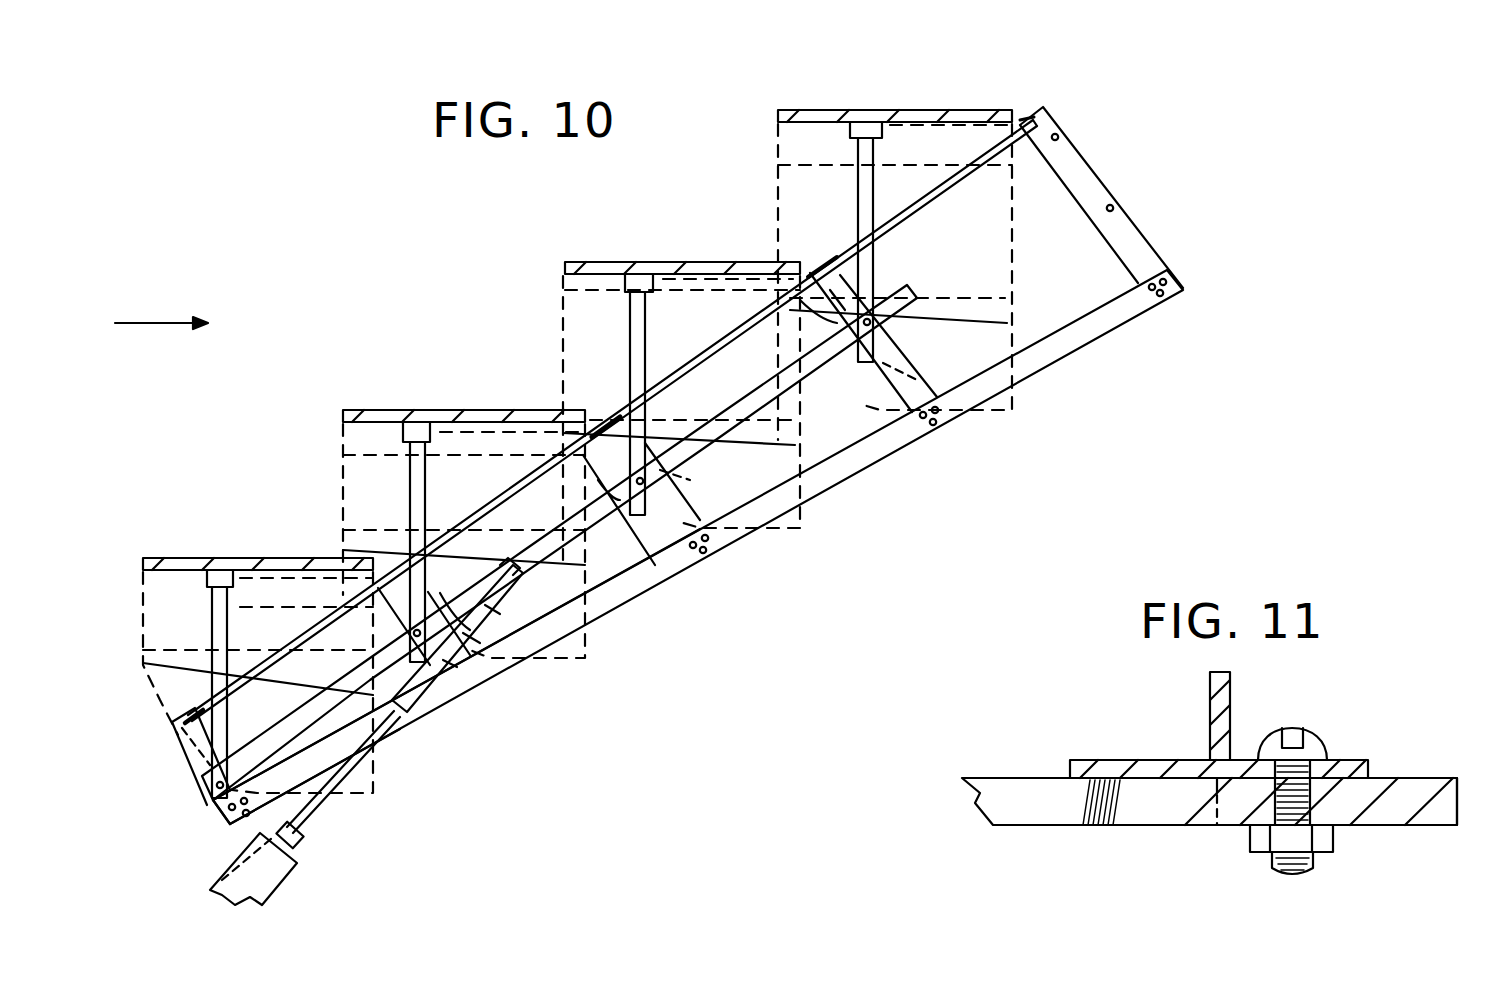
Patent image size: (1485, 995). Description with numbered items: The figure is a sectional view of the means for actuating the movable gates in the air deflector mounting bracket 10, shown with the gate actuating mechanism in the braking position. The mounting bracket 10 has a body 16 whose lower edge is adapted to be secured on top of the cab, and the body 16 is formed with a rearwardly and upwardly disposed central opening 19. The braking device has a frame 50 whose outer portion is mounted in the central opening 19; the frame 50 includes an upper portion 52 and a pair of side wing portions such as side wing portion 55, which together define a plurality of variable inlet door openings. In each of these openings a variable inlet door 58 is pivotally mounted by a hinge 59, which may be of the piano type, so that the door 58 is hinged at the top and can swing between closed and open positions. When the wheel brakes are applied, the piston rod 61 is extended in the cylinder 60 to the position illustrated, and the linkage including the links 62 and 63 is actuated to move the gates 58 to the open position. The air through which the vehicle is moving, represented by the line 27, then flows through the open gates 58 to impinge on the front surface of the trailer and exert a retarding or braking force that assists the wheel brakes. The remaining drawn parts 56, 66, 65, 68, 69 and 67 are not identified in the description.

In FIG. 10, the line representing air flow 27 is at (150, 323).
In FIG. 10, the variable inlet door 58 is at (263, 557).
In FIG. 10, the hinge 59 is at (578, 408).
In FIG. 10, the link 63 is at (640, 343).
In FIG. 10, the upper stringer beam 56 is at (655, 497).
In FIG. 10, the side wing portion 55 is at (727, 547).
In FIG. 10, the link 62 is at (590, 567).
In FIG. 10, the piston rod 61 is at (377, 730).
In FIG. 10, the cylinder 60 is at (272, 870).
In FIG. 11, the body 16 is at (1005, 832).
In FIG. 11, the mounting bracket 10 is at (1423, 758).
In FIG. 11, the frame 50 is at (1192, 725).
In FIG. 11, the upper portion 52 is at (1125, 765).
In FIG. 11, the upright flange 66 is at (1232, 760).
In FIG. 11, the central opening 19 is at (1233, 812).
In FIG. 11, the bolt 65 is at (1325, 757).
In FIG. 11, the bolt head slot 68 is at (1300, 738).
In FIG. 11, the nut 69 is at (1255, 852).
In FIG. 11, the bolt end 67 is at (1320, 852).